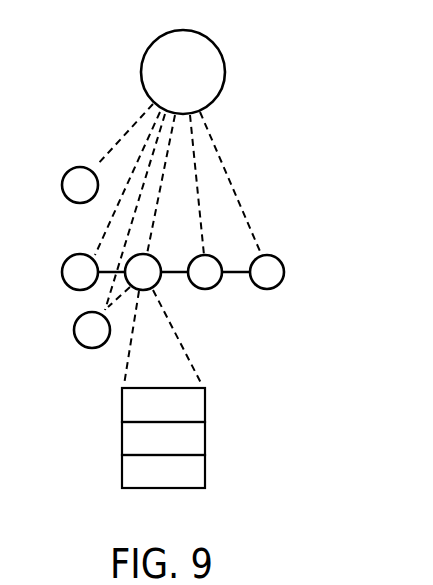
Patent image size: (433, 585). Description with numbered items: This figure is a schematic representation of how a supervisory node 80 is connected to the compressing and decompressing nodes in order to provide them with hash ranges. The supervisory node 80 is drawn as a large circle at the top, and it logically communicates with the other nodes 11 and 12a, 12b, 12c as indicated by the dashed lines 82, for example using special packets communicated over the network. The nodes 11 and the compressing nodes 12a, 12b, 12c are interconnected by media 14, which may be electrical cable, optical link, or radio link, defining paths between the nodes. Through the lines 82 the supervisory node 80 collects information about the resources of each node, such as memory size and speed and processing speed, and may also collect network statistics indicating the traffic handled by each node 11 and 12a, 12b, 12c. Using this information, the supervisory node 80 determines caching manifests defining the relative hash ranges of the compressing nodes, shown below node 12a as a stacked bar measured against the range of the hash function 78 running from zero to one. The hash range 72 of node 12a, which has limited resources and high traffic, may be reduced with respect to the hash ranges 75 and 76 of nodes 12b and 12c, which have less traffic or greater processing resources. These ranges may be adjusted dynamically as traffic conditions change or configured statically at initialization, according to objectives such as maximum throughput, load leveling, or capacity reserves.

The supervisory node 80 is at (218, 53).
The lines 82 is at (163, 162).
The network nodes 11 is at (78, 176).
The node 12a is at (157, 284).
The node 12b is at (218, 284).
The node 12c is at (279, 285).
The media 14 is at (112, 282).
The hash range 72 is at (206, 409).
The hash range 75 is at (206, 441).
The hash range 76 is at (206, 474).
The range of the hash function 78 is at (168, 439).